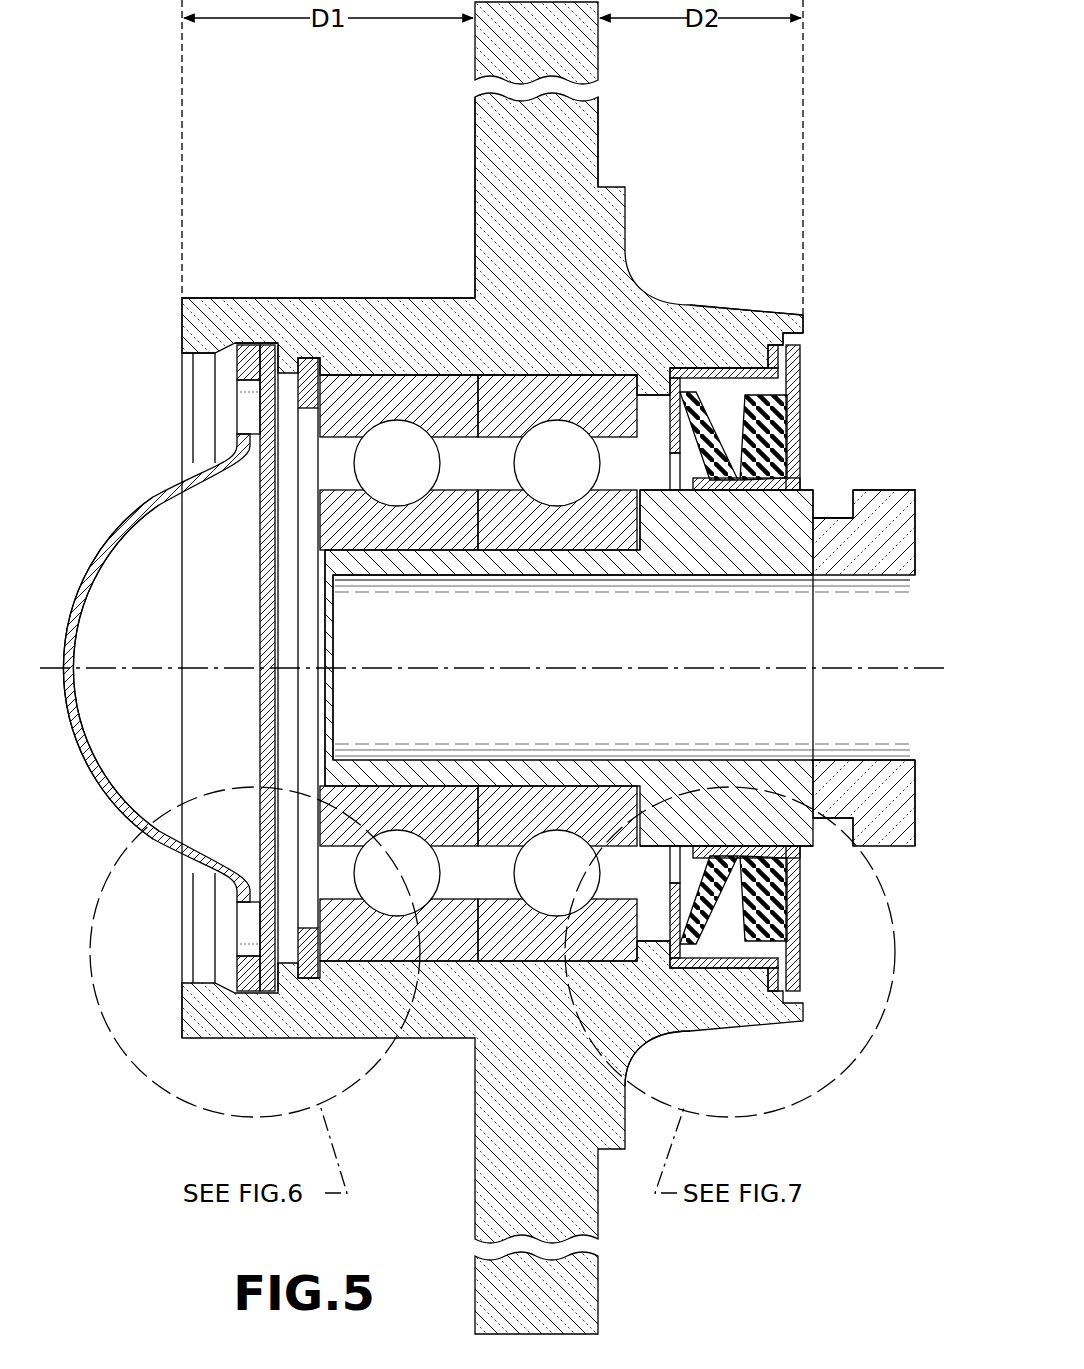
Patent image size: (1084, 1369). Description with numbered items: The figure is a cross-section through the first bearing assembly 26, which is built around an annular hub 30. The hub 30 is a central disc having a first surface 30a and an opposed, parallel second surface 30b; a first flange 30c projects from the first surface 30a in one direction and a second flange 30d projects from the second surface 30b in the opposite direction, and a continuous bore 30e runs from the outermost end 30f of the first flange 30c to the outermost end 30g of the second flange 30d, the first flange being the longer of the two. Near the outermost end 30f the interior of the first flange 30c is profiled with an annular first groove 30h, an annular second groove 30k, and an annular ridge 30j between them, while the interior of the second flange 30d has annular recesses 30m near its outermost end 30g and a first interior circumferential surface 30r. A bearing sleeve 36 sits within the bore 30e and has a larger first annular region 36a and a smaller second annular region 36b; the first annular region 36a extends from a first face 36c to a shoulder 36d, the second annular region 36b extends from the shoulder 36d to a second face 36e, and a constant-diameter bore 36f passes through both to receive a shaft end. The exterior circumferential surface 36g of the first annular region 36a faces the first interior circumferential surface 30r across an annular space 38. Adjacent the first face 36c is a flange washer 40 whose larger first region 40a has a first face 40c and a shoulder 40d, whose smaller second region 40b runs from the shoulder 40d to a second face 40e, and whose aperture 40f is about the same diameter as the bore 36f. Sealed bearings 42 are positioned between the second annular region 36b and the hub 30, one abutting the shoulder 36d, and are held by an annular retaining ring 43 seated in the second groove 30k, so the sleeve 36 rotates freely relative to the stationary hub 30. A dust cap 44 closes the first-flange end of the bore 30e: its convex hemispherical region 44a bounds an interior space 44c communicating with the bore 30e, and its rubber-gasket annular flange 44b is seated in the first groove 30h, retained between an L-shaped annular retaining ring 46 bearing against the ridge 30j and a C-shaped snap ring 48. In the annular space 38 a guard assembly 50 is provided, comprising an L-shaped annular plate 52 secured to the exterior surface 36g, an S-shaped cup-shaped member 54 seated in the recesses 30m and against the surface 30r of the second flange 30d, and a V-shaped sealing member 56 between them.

The first bearing assembly 26 is at (713, 1278).
The annular hub 30 is at (472, 131).
The first surface 30a is at (475, 163).
The second surface 30b is at (598, 140).
The first flange 30c is at (235, 305).
The second flange 30d is at (750, 317).
The bore 30e is at (512, 388).
The outermost end of first flange 30f is at (182, 333).
The outermost end of second flange 30g is at (804, 323).
The annular first groove 30h is at (228, 360).
The annular ridge 30j is at (293, 352).
The annular second groove 30k is at (373, 352).
The annular recesses 30m is at (801, 360).
The first interior circumferential surface 30r is at (716, 947).
The bearing sleeve 36 is at (377, 547).
The first annular region 36a is at (728, 547).
The second annular region 36b is at (497, 572).
The first face 36c is at (840, 782).
The shoulder 36d is at (638, 556).
The second face 36e is at (328, 770).
The bore of bearing sleeve 36f is at (362, 601).
The exterior circumferential surface 36g is at (735, 857).
The annular space 38 is at (648, 417).
The flange washer 40 is at (923, 792).
The first region of flange washer 40a is at (883, 842).
The second region of flange washer 40b is at (833, 525).
The first face of flange washer 40c is at (913, 560).
The shoulder of flange washer 40d is at (836, 530).
The second face of flange washer 40e is at (808, 553).
The aperture 40f is at (852, 680).
The bearings 42 is at (399, 373).
The annular retaining ring 43 is at (326, 352).
The dust cap 44 is at (140, 493).
The hemispherical region 44a is at (134, 513).
The annular flange 44b is at (262, 395).
The interior space 44c is at (153, 535).
The annular retaining ring 46 is at (272, 988).
The C-shaped snap ring 48 is at (256, 352).
The guard assembly 50 is at (807, 385).
The annular plate 52 is at (803, 410).
The cup-shaped member 54 is at (714, 365).
The sealing member 56 is at (786, 436).